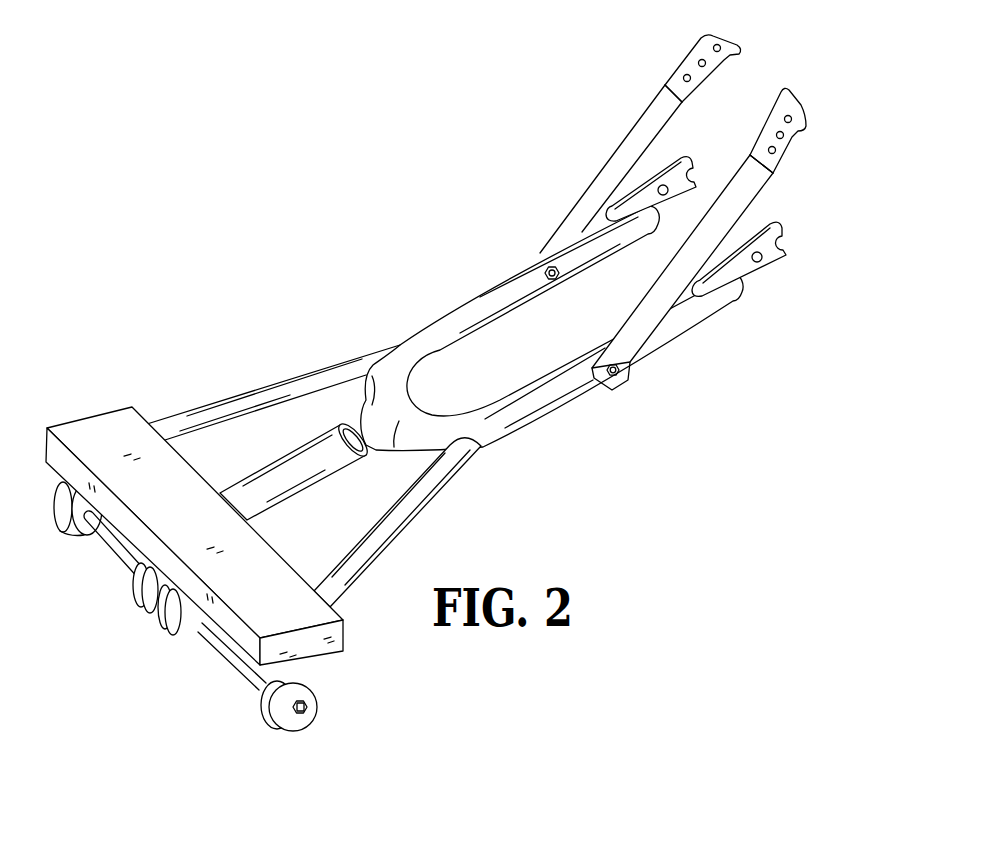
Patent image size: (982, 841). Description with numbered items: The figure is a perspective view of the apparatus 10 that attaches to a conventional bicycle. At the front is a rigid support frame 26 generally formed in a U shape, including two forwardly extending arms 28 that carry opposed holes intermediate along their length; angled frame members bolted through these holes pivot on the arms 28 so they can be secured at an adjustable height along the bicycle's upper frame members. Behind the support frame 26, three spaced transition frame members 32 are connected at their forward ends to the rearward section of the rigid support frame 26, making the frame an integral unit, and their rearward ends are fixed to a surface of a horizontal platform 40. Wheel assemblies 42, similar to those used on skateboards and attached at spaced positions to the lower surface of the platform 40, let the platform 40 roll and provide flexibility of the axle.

The apparatus 10 is at (432, 413).
The rigid support frame 26 is at (386, 403).
The arms 28 is at (492, 298).
The transition frame members 32 is at (240, 398).
The horizontal platform 40 is at (112, 428).
The wheel assemblies 42 is at (60, 528).